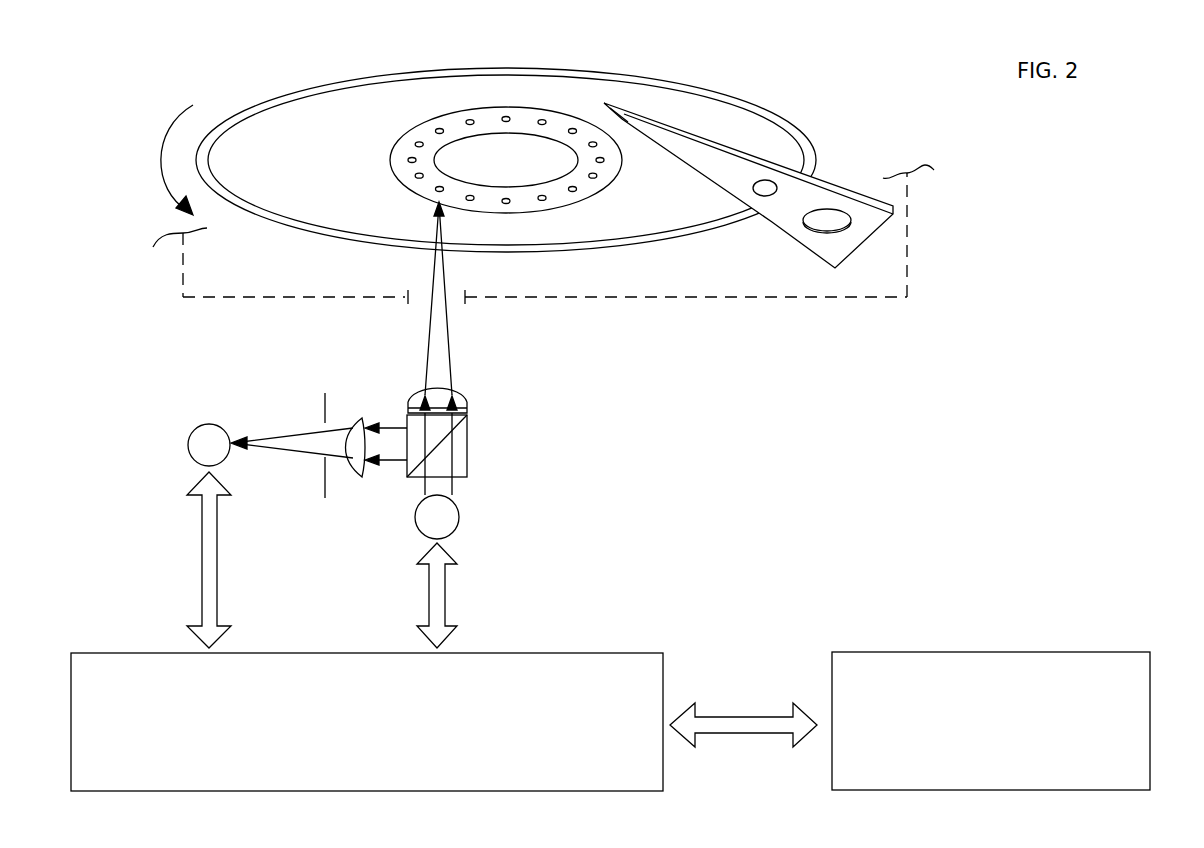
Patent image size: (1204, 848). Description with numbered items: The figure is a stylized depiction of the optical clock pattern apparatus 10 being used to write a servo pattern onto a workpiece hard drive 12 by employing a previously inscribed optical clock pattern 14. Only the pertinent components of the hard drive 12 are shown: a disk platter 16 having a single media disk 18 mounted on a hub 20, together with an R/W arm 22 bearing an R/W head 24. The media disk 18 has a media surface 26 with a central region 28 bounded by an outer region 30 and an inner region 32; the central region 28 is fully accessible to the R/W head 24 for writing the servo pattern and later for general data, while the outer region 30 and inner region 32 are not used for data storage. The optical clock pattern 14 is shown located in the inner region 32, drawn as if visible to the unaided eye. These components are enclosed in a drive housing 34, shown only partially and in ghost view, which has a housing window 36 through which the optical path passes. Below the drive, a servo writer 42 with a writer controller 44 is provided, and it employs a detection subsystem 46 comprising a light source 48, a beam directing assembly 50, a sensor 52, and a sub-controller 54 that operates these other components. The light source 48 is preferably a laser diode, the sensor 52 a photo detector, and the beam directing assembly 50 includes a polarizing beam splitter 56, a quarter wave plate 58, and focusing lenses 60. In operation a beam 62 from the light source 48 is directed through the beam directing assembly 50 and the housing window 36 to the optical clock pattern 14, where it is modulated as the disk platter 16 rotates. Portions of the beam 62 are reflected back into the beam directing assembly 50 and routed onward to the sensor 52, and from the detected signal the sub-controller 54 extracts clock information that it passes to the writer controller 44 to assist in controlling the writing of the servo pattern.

The optical clock pattern apparatus 10 is at (1085, 362).
The workpiece hard drive 12 is at (1022, 218).
The optical clock pattern 14 is at (572, 196).
The disk platter 16 is at (506, 134).
The media disk 18 is at (506, 134).
The hub 20 is at (518, 174).
The R/W arm 22 is at (761, 158).
The R/W head 24 is at (612, 108).
The media surface 26 is at (506, 134).
The central region 28 is at (467, 103).
The outer region 30 is at (413, 78).
The inner region 32 is at (528, 118).
The drive housing 34 is at (267, 297).
The housing window 36 is at (417, 303).
The servo writer 42 is at (1015, 670).
The writer controller 44 is at (1007, 731).
The detection subsystem 46 is at (426, 639).
The light source 48 is at (423, 523).
The beam directing assembly 50 is at (405, 388).
The sensor 52 is at (199, 441).
The sub-controller 54 is at (389, 729).
The polarizing beam splitter 56 is at (467, 450).
The quarter wave plate 58 is at (467, 408).
The focusing lenses 60 is at (362, 418).
The beam 62 is at (450, 365).